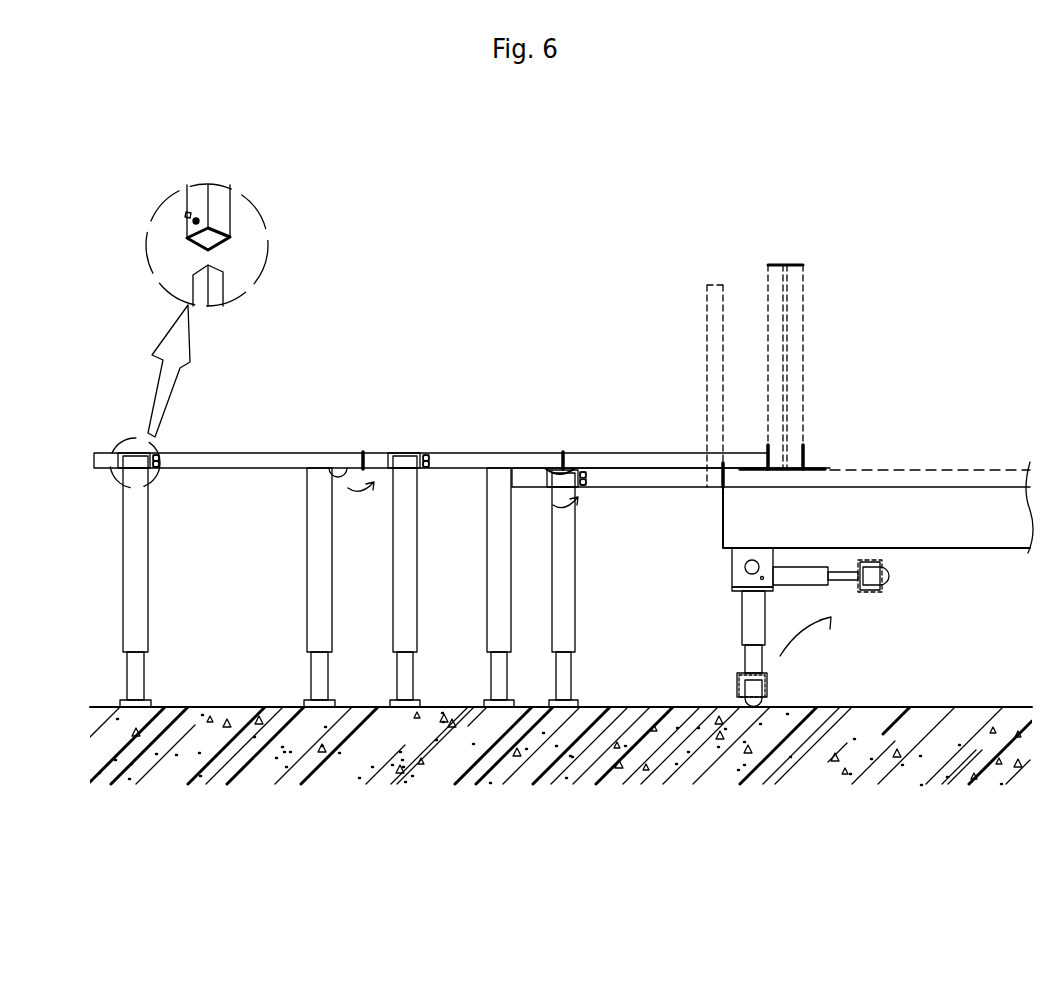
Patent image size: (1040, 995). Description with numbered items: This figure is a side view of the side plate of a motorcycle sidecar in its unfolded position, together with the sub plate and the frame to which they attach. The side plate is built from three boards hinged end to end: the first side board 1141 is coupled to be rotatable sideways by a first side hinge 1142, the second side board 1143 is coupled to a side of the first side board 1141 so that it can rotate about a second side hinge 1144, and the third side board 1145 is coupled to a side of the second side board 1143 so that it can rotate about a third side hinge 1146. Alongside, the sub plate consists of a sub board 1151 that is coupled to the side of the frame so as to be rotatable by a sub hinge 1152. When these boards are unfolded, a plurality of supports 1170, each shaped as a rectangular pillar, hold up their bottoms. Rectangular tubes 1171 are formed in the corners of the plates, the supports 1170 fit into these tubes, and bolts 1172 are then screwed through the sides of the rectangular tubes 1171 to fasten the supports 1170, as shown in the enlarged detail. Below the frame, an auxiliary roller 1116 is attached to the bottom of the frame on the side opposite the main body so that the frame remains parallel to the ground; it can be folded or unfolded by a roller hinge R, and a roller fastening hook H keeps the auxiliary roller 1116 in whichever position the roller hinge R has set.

The auxiliary roller 1116 is at (757, 663).
The first side board 1141 is at (645, 453).
The first side hinge 1142 is at (802, 465).
The second side board 1143 is at (497, 453).
The second side hinge 1144 is at (555, 470).
The third side board 1145 is at (268, 452).
The third side hinge 1146 is at (333, 456).
The sub board 1151 is at (660, 488).
The sub hinge 1152 is at (740, 470).
The support 1170 is at (575, 640).
The rectangular tube 1171 is at (225, 212).
The bolt 1172 is at (185, 218).
The roller hinge R is at (752, 567).
The roller fastening hook H is at (762, 578).